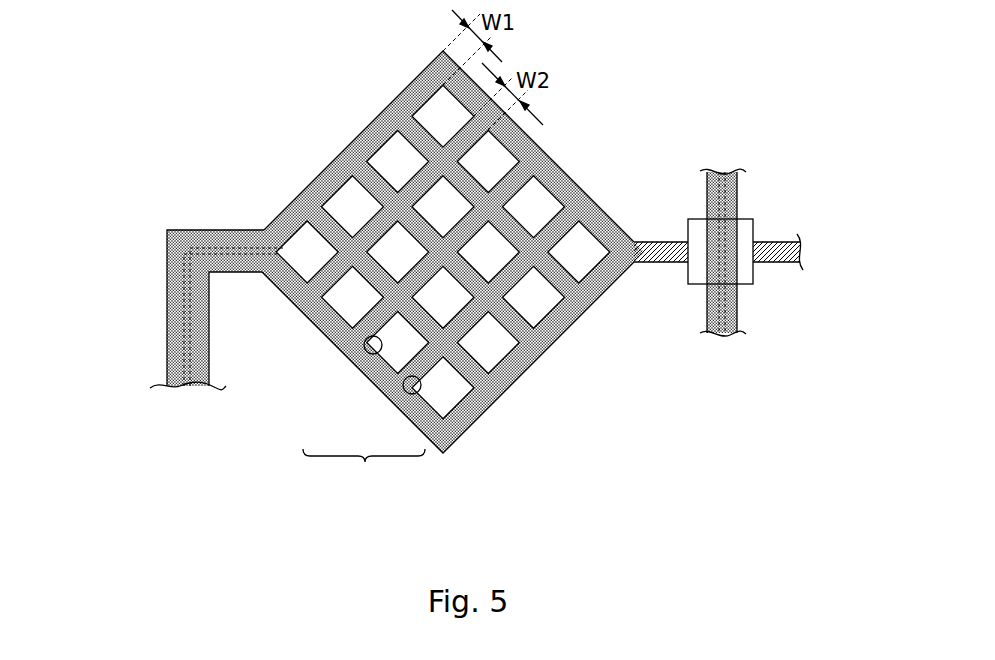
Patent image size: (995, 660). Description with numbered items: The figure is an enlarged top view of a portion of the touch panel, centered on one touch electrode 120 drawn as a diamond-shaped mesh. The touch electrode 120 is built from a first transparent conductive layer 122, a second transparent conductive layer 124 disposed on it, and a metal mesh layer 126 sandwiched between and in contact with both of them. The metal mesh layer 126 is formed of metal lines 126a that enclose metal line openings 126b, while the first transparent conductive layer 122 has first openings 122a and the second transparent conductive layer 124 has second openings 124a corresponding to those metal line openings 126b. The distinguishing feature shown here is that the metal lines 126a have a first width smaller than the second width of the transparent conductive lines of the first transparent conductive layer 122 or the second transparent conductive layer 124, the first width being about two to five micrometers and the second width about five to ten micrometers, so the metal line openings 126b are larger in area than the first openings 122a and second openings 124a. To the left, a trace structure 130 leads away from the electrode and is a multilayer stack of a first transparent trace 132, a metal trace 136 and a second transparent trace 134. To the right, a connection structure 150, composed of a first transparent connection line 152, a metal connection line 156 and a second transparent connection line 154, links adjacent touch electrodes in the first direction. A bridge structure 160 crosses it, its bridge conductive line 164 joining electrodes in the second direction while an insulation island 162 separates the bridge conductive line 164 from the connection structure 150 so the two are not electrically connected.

The touch electrode 120 is at (428, 273).
The first transparent conductive layer 122 is at (520, 377).
The first opening 122a is at (345, 172).
The second transparent conductive layer 124 is at (490, 405).
The second opening 124a is at (370, 178).
The metal mesh layer 126 is at (364, 472).
The metal line 126a is at (366, 352).
The metal line opening 126b is at (322, 188).
The trace structure 130 is at (152, 310).
The first transparent trace 132 is at (176, 319).
The second transparent trace 134 is at (176, 350).
The metal trace 136 is at (185, 333).
The connection structure 150 is at (793, 263).
The first transparent connection line 152 is at (733, 292).
The second transparent connection line 154 is at (738, 322).
The metal connection line 156 is at (728, 306).
The bridge structure 160 is at (753, 205).
The insulation island 162 is at (750, 231).
The bridge conductive line 164 is at (775, 245).